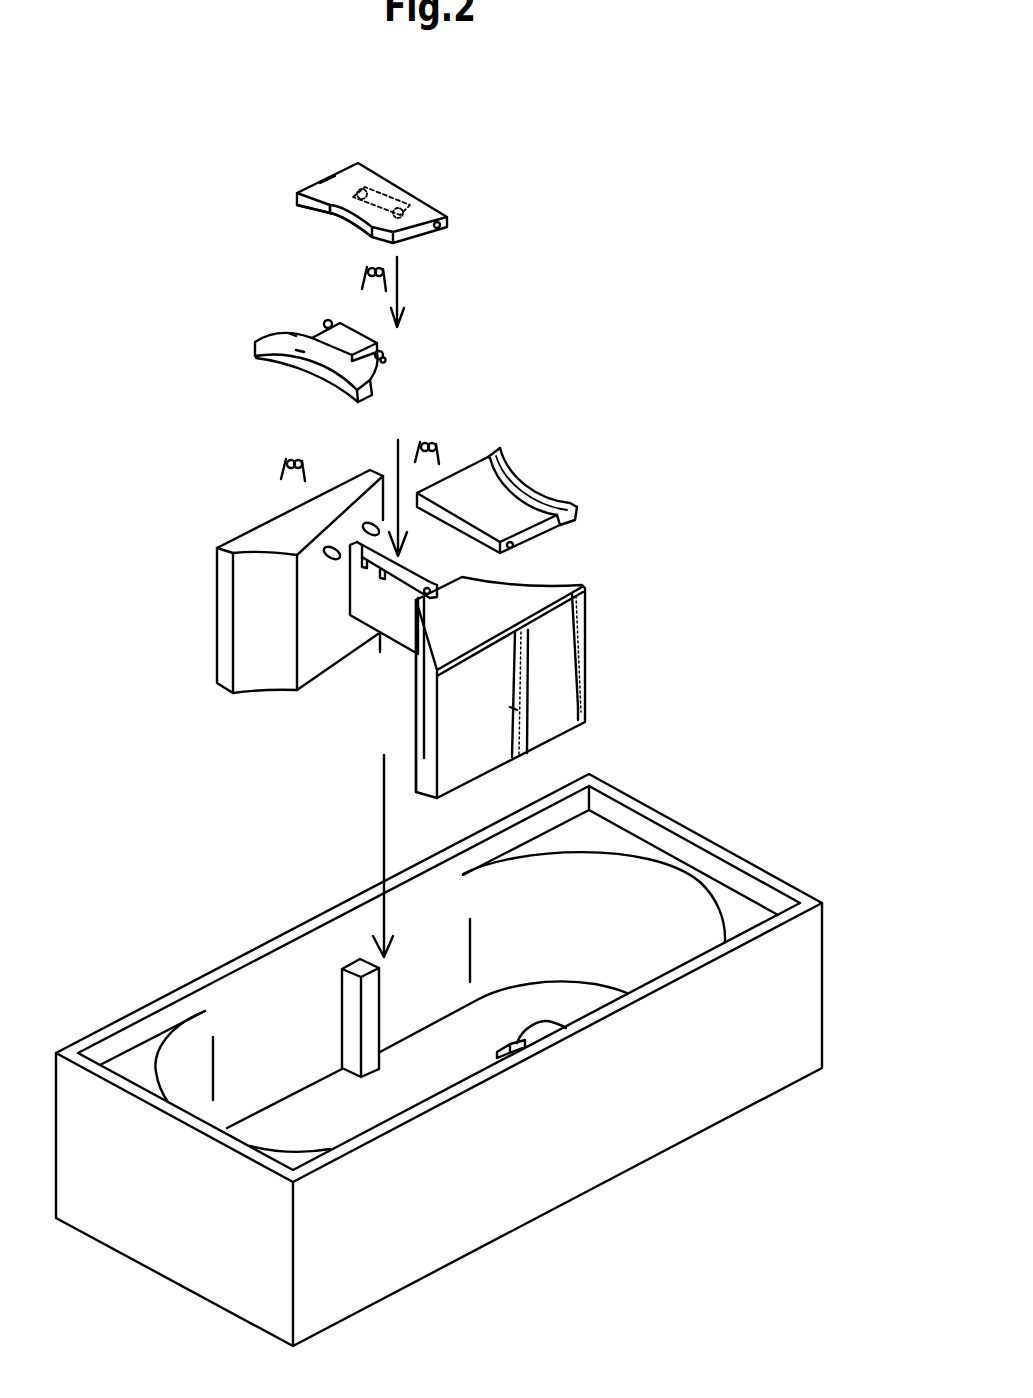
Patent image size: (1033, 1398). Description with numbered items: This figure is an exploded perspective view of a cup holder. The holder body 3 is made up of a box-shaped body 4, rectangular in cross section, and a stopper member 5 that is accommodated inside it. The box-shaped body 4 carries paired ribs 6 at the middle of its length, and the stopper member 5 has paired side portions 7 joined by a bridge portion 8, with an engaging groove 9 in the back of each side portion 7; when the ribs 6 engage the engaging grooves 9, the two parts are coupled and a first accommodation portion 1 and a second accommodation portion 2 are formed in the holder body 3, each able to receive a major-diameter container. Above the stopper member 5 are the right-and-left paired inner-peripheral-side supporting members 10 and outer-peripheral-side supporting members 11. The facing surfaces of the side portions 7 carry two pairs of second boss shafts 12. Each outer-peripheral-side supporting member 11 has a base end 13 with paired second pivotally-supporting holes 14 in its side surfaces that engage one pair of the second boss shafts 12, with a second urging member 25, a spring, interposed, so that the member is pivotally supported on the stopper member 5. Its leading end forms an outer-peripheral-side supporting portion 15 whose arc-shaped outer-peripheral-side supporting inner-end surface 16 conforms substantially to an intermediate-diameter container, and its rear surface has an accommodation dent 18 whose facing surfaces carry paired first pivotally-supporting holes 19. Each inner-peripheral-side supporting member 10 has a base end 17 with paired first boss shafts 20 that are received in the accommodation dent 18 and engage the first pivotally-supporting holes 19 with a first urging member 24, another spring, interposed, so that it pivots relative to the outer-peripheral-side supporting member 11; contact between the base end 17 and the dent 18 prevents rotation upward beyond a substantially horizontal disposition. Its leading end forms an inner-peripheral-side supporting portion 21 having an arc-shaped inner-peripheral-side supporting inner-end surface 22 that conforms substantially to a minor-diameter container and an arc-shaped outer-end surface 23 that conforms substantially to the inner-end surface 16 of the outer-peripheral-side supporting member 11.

The first accommodation portion 1 is at (309, 1123).
The second accommodation portion 2 is at (559, 960).
The holder body 3 is at (776, 717).
The box-shaped body 4 is at (725, 852).
The stopper member 5 is at (622, 644).
The ribs 6 is at (355, 990).
The side portions 7 is at (238, 543).
The bridge portion 8 is at (370, 608).
The engaging groove 9 is at (515, 740).
The inner-peripheral-side supporting member 10 is at (213, 338).
The outer-peripheral-side supporting member 11 is at (383, 155).
The second boss shafts 12 is at (370, 520).
The base end 13 is at (387, 183).
The second pivotally-supporting holes 14 is at (447, 223).
The outer-peripheral-side supporting portion 15 is at (327, 183).
The outer-peripheral-side supporting inner-end surface 16 is at (333, 205).
The base end 17 is at (357, 340).
The accommodation dent 18 is at (353, 212).
The first pivotally-supporting holes 19 is at (360, 182).
The first boss shafts 20 is at (327, 321).
The inner-peripheral-side supporting portion 21 is at (320, 353).
The inner-peripheral-side supporting inner-end surface 22 is at (300, 357).
The outer-end surface 23 is at (292, 333).
The first urging member 24 is at (363, 272).
The second urging member 25 is at (282, 465).